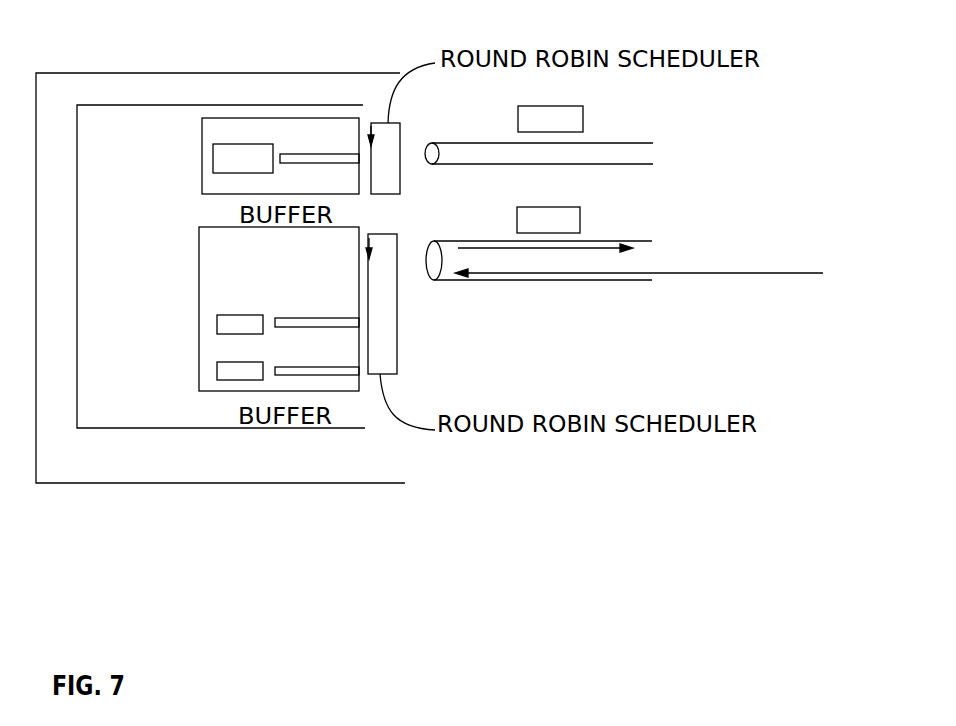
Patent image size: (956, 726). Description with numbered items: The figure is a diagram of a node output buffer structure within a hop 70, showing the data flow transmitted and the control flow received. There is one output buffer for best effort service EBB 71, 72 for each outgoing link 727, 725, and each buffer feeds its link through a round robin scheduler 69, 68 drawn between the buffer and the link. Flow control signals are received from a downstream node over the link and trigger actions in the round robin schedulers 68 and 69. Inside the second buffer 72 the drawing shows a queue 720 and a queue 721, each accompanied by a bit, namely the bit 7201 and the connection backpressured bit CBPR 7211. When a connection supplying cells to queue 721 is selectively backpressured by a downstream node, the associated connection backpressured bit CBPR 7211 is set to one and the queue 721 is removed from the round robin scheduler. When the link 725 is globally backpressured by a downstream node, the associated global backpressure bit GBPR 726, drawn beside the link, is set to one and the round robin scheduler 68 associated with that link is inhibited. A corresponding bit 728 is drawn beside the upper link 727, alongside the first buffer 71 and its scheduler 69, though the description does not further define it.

The hop 70 is at (295, 73).
The output buffer for best effort service EBB 71 is at (202, 186).
The output buffer for best effort service EBB 72 is at (260, 309).
The round robin scheduler 69 is at (387, 195).
The round robin scheduler 68 is at (382, 233).
The outgoing link 727 is at (553, 165).
The output port 728 is at (615, 112).
The global backpressure bit GBPR 726 is at (610, 208).
The outgoing link 725 is at (500, 281).
The buffer cell 7201 is at (221, 315).
The connection backpressured bit CBPR 7211 is at (221, 363).
The buffer queue 720 is at (305, 318).
The queue 721 is at (305, 367).